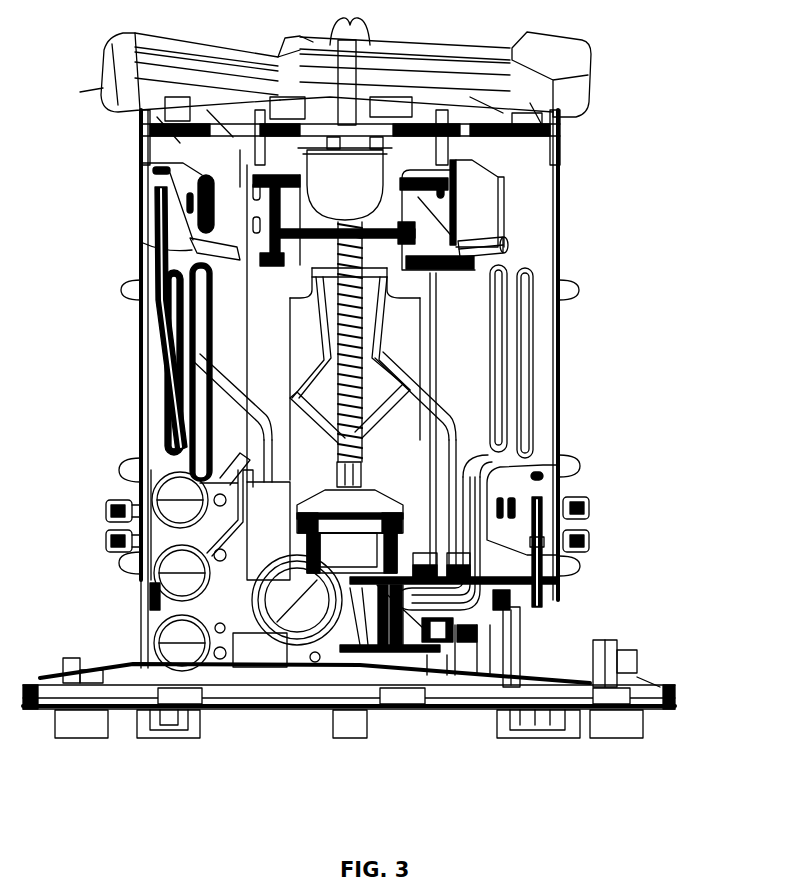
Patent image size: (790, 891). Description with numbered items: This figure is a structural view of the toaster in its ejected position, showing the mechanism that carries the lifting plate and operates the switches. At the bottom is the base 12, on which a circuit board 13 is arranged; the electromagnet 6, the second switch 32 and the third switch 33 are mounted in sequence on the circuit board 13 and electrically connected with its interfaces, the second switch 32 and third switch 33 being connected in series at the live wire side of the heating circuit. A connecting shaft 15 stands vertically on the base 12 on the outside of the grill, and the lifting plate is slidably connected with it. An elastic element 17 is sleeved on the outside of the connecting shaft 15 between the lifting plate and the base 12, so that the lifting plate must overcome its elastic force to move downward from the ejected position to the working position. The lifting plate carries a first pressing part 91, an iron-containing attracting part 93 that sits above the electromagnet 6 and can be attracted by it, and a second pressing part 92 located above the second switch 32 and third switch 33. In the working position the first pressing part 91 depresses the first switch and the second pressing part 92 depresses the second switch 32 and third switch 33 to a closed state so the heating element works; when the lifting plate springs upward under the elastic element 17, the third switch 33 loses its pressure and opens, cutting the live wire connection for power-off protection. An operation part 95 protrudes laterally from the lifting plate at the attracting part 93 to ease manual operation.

The connecting shaft 15 is at (292, 42).
The operation part 95 is at (367, 163).
The attracting part 93 is at (388, 213).
The second pressing part 92 is at (508, 250).
The first pressing part 91 is at (255, 278).
The elastic element 17 is at (285, 407).
The electromagnet 6 is at (400, 490).
The second switch 32 is at (490, 535).
The third switch 33 is at (548, 520).
The circuit board 13 is at (497, 575).
The base 12 is at (575, 665).